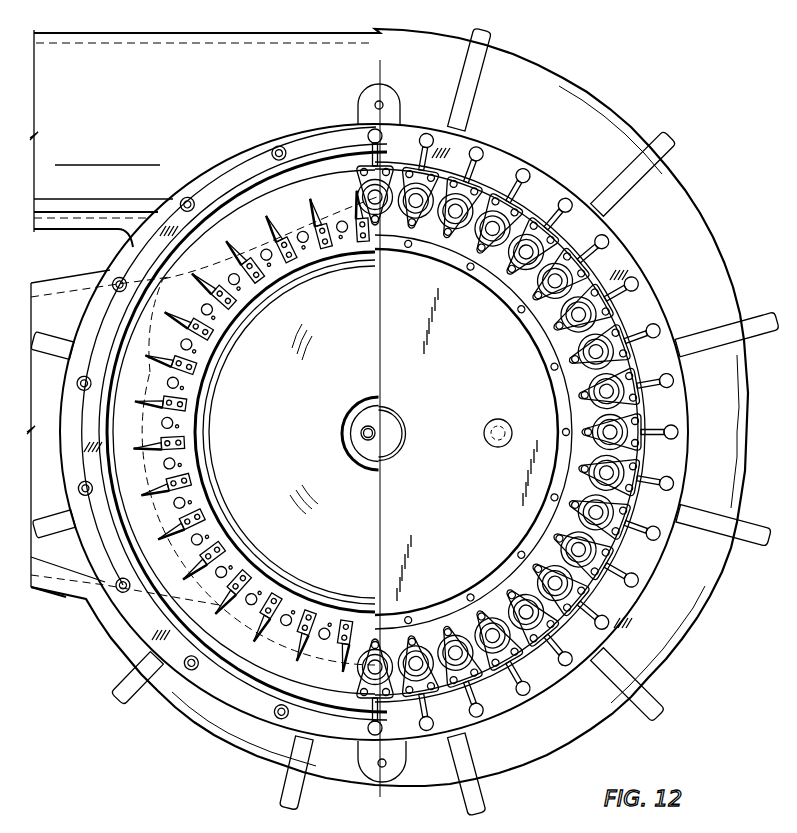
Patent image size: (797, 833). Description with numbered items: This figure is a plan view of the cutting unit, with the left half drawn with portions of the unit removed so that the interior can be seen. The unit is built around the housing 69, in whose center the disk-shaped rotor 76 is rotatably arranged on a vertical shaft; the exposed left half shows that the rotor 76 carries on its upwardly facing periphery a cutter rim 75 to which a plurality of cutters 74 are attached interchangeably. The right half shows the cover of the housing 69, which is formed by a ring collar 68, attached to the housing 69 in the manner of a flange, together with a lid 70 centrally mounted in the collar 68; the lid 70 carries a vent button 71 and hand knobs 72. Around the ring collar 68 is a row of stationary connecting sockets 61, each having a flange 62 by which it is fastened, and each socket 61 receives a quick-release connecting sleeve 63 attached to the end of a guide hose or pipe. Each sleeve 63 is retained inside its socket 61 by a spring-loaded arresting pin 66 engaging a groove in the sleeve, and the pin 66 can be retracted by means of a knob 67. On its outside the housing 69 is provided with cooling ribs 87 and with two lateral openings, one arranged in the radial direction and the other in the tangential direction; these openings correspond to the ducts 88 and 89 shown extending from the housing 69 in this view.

The connecting socket 61 is at (533, 262).
The flange 62 is at (545, 283).
The connecting sleeve 63 is at (607, 548).
The arresting pin 66 is at (662, 468).
The knob 67 is at (670, 382).
The ring collar 68 is at (527, 580).
The housing 69 is at (690, 630).
The lid 70 is at (477, 503).
The vent button 71 is at (402, 418).
The hand knob 72 is at (508, 421).
The cutter 74 is at (205, 283).
The cutter rim 75 is at (286, 281).
The rotor 76 is at (297, 432).
The cooling rib 87 is at (724, 518).
The inlet duct 88 is at (81, 597).
The outlet duct 89 is at (246, 33).